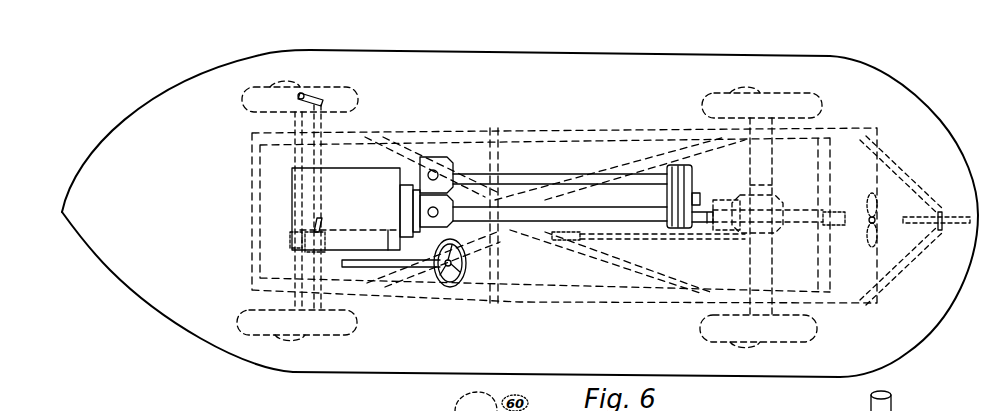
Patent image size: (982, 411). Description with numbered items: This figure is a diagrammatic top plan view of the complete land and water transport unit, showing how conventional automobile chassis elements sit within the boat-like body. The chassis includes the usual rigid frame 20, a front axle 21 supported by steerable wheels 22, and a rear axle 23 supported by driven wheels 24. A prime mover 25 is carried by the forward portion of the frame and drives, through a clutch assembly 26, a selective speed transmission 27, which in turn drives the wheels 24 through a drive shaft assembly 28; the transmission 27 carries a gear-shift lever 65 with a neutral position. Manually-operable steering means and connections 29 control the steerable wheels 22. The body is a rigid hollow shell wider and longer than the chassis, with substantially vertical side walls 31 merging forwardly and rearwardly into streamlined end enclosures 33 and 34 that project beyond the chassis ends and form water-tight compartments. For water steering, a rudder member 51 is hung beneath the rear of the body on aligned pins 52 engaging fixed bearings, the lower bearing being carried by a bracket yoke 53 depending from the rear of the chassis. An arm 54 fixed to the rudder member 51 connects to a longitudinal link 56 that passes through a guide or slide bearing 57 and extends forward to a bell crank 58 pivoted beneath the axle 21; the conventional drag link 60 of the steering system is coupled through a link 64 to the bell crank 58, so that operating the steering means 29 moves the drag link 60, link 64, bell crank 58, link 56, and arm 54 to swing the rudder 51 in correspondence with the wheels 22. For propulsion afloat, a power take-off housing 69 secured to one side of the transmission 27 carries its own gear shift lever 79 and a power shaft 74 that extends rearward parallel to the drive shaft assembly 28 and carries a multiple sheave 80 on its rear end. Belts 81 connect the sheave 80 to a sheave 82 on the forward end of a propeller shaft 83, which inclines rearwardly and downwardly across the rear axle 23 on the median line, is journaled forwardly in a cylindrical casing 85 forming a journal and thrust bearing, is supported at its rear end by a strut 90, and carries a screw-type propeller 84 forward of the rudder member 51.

The rigid frame 20 is at (620, 135).
The front axle 21 is at (296, 154).
The steerable wheels 22 is at (297, 211).
The rear axle 23 is at (762, 172).
The driven wheels 24 is at (761, 217).
The prime mover 25 is at (346, 209).
The clutch assembly 26 is at (405, 201).
The selective speed transmission 27 is at (435, 205).
The drive shaft assembly 28 is at (588, 209).
The steering means and connections 29 is at (378, 262).
The side walls 31 is at (500, 53).
The front end enclosure 33 is at (186, 211).
The rear end enclosure 34 is at (904, 216).
The rudder member 51 is at (938, 227).
The pins 52 is at (896, 401).
The bracket yoke 53 is at (895, 168).
The arm 54 is at (941, 232).
The link 56 is at (692, 238).
The guide or slide bearing 57 is at (580, 237).
The bell crank 58 is at (297, 243).
The drag link 60 is at (325, 138).
The link 64 is at (312, 245).
The gear-shift lever 65 is at (448, 213).
The housing 69 is at (446, 176).
The power shaft 74 is at (645, 181).
The gear shift lever 79 is at (436, 171).
The belt pulley or multiple sheave 80 is at (692, 185).
The belts 81 is at (701, 197).
The sheave 82 is at (667, 218).
The propeller shaft 83 is at (797, 219).
The screw-type propeller 84 is at (878, 212).
The cylindrical casing 85 is at (716, 208).
The strut 90 is at (836, 213).